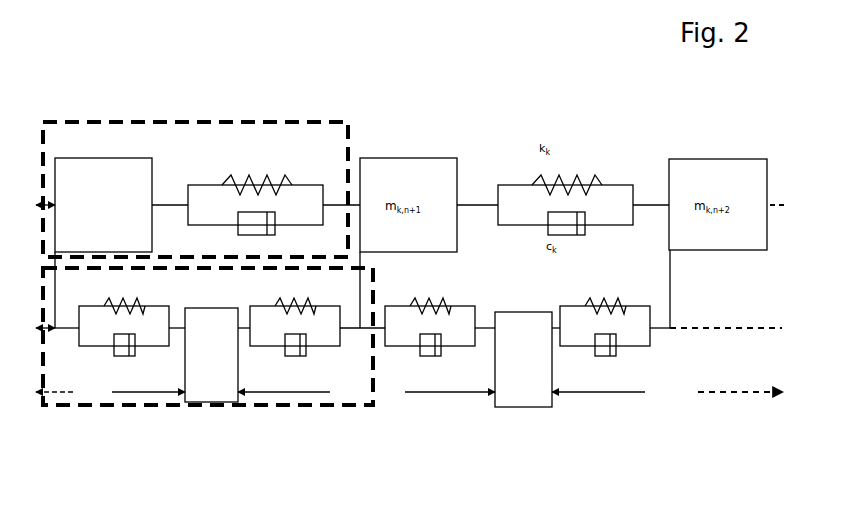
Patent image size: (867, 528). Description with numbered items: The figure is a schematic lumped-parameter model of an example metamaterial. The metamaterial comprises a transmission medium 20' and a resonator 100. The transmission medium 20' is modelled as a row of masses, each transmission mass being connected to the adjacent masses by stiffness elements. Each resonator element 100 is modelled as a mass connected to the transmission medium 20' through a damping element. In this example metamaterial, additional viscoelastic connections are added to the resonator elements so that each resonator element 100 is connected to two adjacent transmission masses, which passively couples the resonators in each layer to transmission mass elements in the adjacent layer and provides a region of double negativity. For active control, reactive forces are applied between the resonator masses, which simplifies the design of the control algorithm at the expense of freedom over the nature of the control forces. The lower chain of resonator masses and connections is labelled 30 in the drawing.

The transmission medium 20' is at (198, 189).
The resonator element 100 is at (96, 381).
The track model (rail mass-spring-damper chain) 30 is at (409, 371).